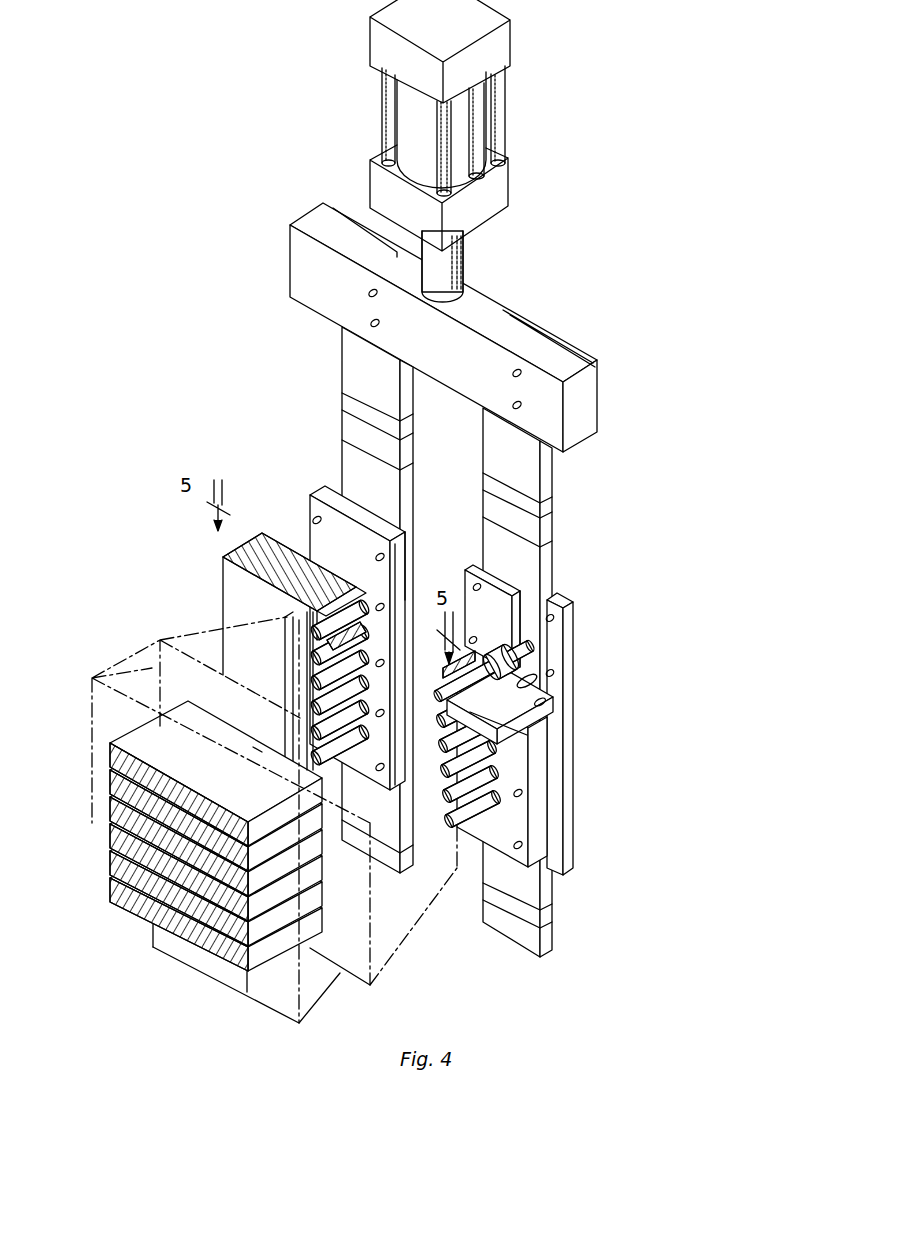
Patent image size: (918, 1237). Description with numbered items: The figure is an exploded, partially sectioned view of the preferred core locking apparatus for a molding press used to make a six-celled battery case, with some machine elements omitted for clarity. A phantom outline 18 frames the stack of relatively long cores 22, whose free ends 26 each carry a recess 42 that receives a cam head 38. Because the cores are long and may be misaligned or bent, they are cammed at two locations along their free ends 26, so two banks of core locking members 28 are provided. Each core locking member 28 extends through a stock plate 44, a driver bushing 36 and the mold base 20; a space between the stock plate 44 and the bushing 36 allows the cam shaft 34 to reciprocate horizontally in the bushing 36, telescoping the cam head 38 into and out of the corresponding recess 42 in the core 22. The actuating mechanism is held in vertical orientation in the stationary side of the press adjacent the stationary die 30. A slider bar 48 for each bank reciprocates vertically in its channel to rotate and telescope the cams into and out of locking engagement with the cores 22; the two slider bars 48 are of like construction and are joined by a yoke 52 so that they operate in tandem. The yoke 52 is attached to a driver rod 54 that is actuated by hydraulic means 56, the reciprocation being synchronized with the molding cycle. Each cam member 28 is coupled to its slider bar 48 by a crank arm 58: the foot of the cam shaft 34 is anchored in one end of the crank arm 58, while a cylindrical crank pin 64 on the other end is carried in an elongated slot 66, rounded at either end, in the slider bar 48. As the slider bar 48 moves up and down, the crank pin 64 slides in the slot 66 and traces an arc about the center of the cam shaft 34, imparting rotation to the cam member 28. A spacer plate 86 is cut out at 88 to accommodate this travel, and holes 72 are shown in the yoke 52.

The phantom frame 18 is at (190, 643).
The mold base 20 is at (265, 583).
The cores 22 is at (106, 746).
The free ends 26 is at (223, 723).
The core locking members 28 is at (363, 613).
The stationary die 30 is at (300, 552).
The cam shaft 34 is at (352, 628).
The driver bushings 36 is at (352, 772).
The cam head 38 is at (318, 660).
The recess 42 is at (255, 747).
The stock plate 44 is at (327, 500).
The slider bar 48 is at (352, 352).
The yoke 52 is at (487, 320).
The driver rod 54 is at (440, 270).
The hydraulic means 56 is at (478, 140).
The crank arm 58 is at (533, 650).
The crank pin 64 is at (527, 650).
The slot 66 is at (540, 700).
The holes 72 is at (370, 297).
The spacer plate 86 is at (408, 553).
The cut out 88 is at (520, 637).